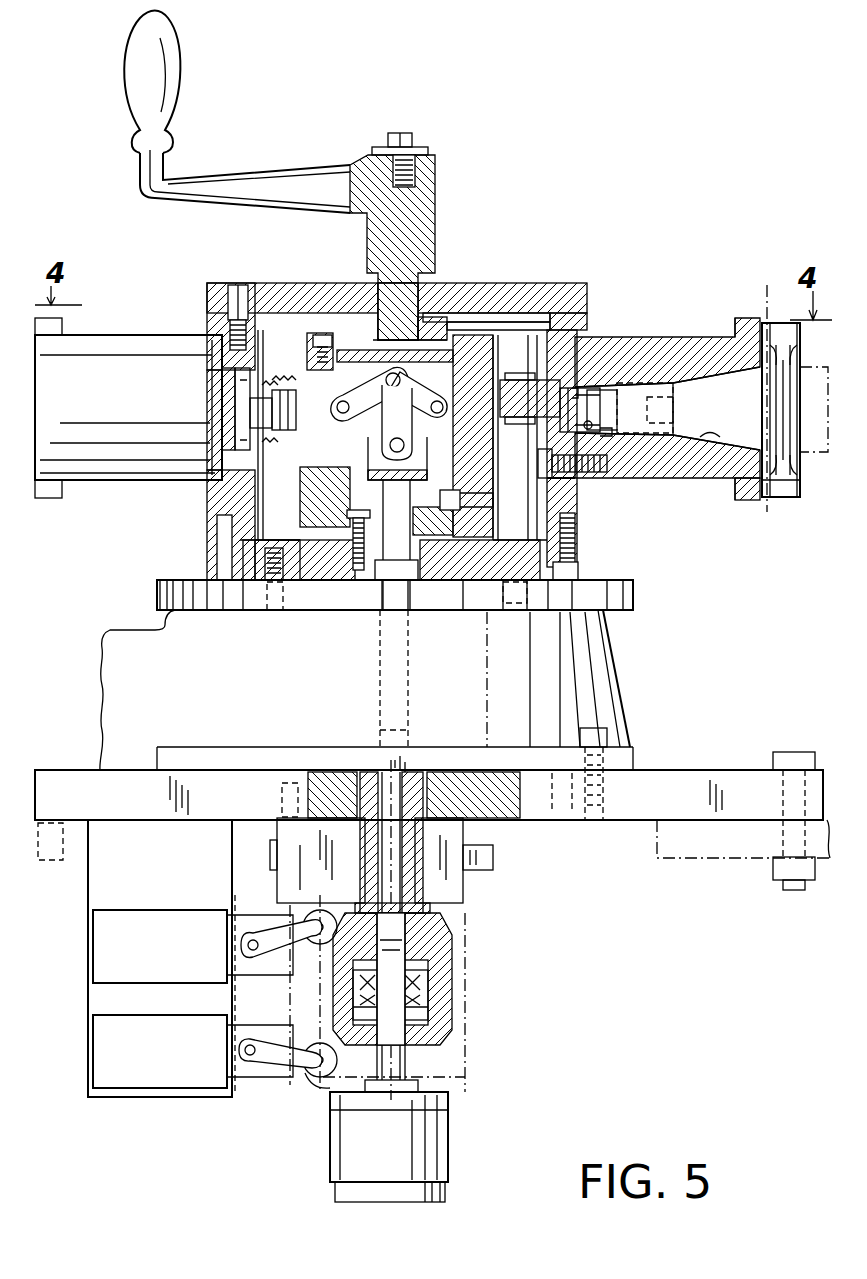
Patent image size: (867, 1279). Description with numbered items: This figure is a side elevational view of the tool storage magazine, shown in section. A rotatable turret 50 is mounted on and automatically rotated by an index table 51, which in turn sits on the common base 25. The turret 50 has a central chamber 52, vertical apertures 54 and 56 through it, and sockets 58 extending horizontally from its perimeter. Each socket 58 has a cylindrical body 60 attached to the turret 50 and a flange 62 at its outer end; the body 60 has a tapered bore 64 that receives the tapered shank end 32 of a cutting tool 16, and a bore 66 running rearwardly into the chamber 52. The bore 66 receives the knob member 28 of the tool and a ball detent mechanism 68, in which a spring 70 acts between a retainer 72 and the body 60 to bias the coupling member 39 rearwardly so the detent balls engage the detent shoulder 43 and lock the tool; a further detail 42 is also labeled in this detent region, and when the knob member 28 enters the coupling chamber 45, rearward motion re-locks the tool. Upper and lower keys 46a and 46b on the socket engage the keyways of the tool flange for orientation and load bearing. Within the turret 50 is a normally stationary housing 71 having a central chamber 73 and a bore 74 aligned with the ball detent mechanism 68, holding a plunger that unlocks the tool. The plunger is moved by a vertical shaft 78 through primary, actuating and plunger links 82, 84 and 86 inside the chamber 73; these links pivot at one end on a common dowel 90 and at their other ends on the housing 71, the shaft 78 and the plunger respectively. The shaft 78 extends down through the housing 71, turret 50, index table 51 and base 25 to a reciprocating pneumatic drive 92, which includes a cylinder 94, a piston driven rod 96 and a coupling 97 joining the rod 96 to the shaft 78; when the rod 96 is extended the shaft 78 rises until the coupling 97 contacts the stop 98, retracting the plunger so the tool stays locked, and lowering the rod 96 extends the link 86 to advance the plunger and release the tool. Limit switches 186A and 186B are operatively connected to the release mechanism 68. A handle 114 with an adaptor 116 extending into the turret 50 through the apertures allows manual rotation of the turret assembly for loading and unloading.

The handle 114 is at (243, 173).
The adaptor 116 is at (414, 285).
The central chamber 52 is at (283, 347).
The vertical aperture 54 is at (423, 303).
The rotatable turret 50 is at (527, 290).
The common dowel 90 is at (393, 372).
The plunger link 86 is at (417, 402).
The primary link 82 is at (390, 386).
The actuating link 84 is at (407, 433).
The retainer 72 is at (498, 403).
The spring 70 is at (525, 427).
The bore 74 is at (470, 417).
The stationary housing 71 is at (362, 443).
The central chamber 73 is at (322, 448).
The socket 58 is at (114, 337).
The bore 66 is at (565, 385).
The detent shoulder 43 is at (600, 390).
The ball detent mechanism 68 is at (618, 380).
The knob member 28 is at (660, 363).
The cylindrical body 60 is at (707, 340).
The flange 62 is at (745, 325).
The upper key 46a is at (778, 325).
The tapered shank end 32 is at (741, 425).
The pin 42 is at (590, 430).
The coupling member 39 is at (607, 434).
The coupling chamber 45 is at (577, 400).
The tapered bore 64 is at (728, 443).
The lower key 46b is at (782, 490).
The cutting tool 16 is at (805, 462).
The index table 51 is at (622, 597).
The vertical aperture 56 is at (383, 575).
The vertical shaft 78 is at (410, 684).
The base 25 is at (683, 778).
The stop 98 is at (430, 910).
The coupling 97 is at (452, 987).
The piston driven rod 96 is at (400, 1063).
The reciprocating pneumatic drive 92 is at (433, 1146).
The cylinder 94 is at (432, 1162).
The limit switch 186A is at (194, 1068).
The limit switch 186B is at (202, 963).